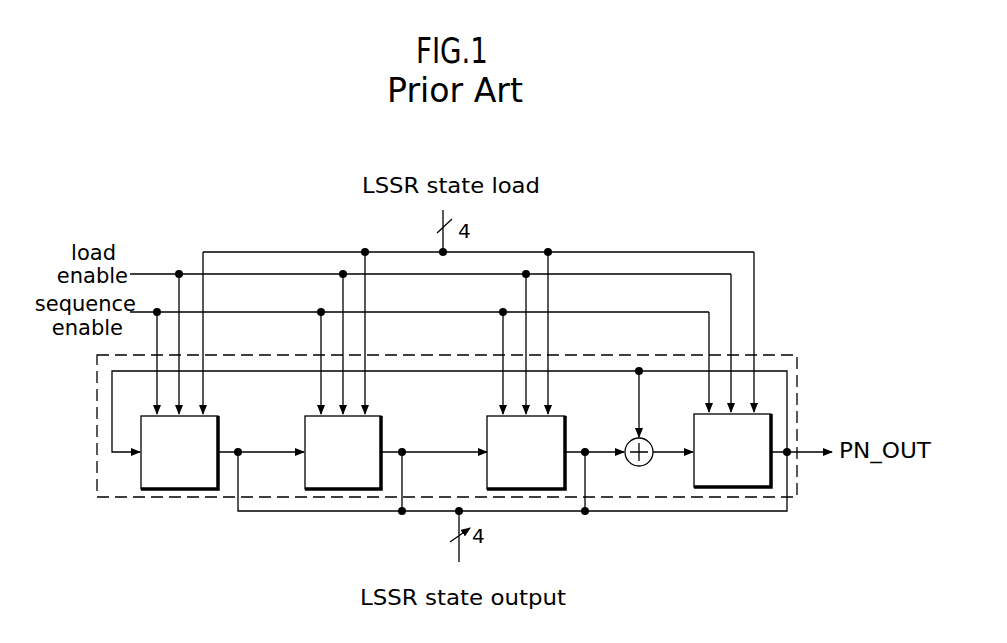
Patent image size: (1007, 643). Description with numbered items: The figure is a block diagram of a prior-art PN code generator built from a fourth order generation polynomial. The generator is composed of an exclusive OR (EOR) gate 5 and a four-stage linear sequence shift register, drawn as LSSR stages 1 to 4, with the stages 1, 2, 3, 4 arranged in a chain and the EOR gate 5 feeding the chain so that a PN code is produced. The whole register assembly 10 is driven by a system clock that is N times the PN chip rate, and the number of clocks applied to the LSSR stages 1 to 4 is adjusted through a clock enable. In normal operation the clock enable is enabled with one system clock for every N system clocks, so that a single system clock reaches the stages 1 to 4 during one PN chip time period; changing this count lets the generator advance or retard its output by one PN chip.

The LSSR stage 1 is at (182, 483).
The LSSR stage 2 is at (344, 483).
The LSSR stage 3 is at (526, 483).
The LSSR stage 4 is at (732, 478).
The exclusive OR (EOR) gate 5 is at (628, 441).
The linear sequence shift register (LSSR) 10 is at (797, 400).